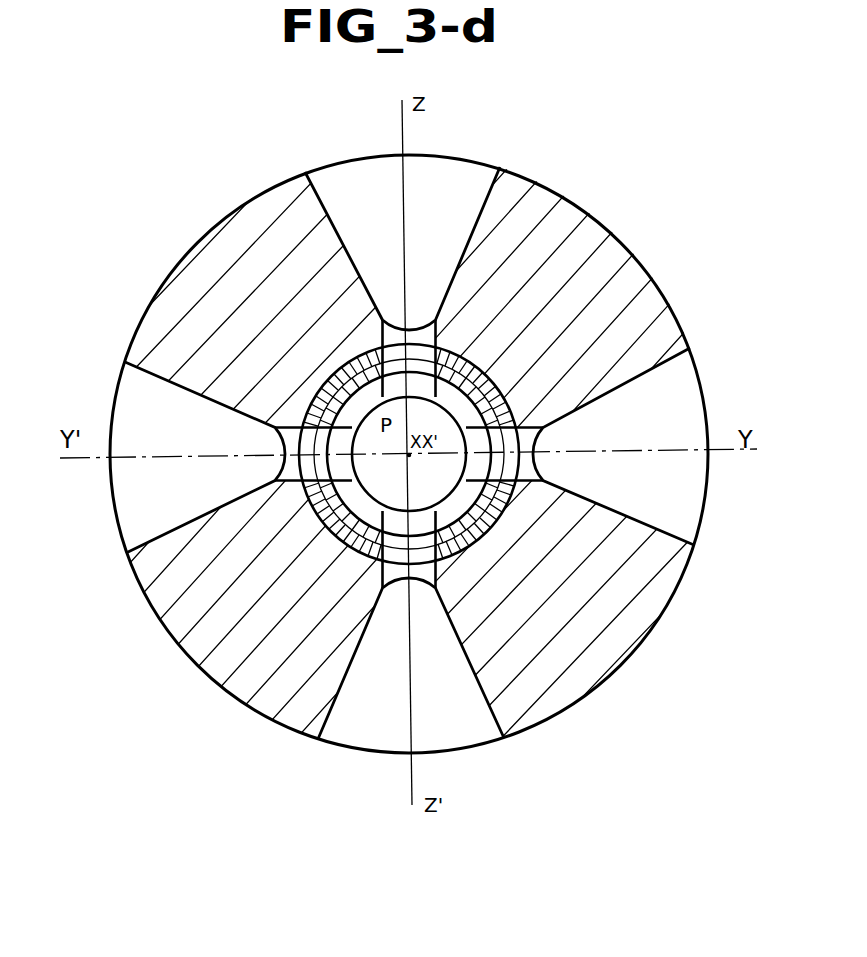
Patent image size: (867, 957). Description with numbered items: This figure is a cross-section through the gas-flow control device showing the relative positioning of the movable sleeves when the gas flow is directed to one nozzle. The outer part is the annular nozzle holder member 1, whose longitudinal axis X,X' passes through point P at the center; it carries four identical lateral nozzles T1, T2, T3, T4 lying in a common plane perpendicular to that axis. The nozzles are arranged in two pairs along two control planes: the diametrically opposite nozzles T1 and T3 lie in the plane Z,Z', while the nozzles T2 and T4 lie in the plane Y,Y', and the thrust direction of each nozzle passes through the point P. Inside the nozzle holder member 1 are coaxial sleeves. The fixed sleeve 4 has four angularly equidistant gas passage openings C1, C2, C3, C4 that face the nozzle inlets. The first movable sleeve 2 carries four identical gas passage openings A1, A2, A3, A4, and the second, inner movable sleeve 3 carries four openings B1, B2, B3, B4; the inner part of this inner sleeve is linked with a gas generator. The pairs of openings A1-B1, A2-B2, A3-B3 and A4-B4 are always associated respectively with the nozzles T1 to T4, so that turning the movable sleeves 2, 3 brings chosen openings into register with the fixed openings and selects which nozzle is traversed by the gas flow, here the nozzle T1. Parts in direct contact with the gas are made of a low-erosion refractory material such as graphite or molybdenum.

The annular nozzle holder member 1 is at (582, 249).
The first movable sleeve 2 is at (275, 465).
The second movable sleeve 3 is at (392, 596).
The fixed sleeve 4 is at (357, 493).
The nozzle T1 is at (466, 169).
The nozzle T2 is at (688, 387).
The nozzle T3 is at (375, 742).
The nozzle T4 is at (118, 516).
The gas passage opening A1 is at (402, 336).
The gas passage opening A2 is at (536, 436).
The gas passage opening A3 is at (474, 540).
The gas passage opening A4 is at (299, 505).
The gas passage opening B1 is at (368, 357).
The gas passage opening B2 is at (497, 393).
The gas passage opening B3 is at (446, 570).
The gas passage opening B4 is at (296, 413).
The gas passage opening C1 is at (433, 351).
The gas passage opening C2 is at (468, 463).
The gas passage opening C3 is at (360, 551).
The gas passage opening C4 is at (322, 379).